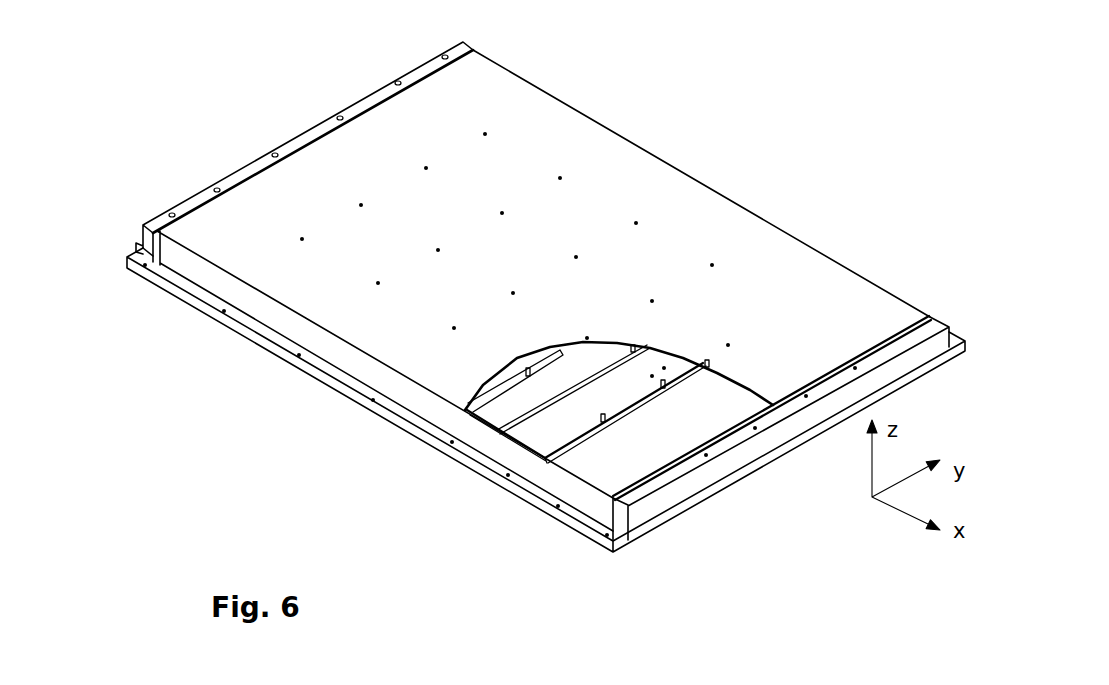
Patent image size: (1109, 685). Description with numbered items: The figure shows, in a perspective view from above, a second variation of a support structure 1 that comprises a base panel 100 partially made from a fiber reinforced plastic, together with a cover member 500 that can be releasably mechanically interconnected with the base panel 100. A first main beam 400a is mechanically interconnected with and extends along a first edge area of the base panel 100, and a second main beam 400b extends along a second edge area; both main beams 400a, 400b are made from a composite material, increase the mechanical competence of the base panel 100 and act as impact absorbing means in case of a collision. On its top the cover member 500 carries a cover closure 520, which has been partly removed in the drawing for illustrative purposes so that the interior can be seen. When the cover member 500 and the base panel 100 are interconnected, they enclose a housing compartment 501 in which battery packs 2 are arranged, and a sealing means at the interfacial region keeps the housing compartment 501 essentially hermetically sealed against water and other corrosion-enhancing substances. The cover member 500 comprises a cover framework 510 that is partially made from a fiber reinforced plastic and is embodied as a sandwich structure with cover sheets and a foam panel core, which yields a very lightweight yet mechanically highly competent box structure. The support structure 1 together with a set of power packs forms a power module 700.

The support structure 1 is at (223, 102).
The battery pack 2 is at (693, 420).
The base panel 100 is at (397, 430).
The first main beam 400a is at (673, 493).
The second main beam 400b is at (243, 167).
The cover member 500 is at (733, 180).
The housing compartment 501 is at (652, 362).
The cover framework 510 is at (557, 377).
The cover closure 520 is at (378, 323).
The power module 700 is at (271, 66).